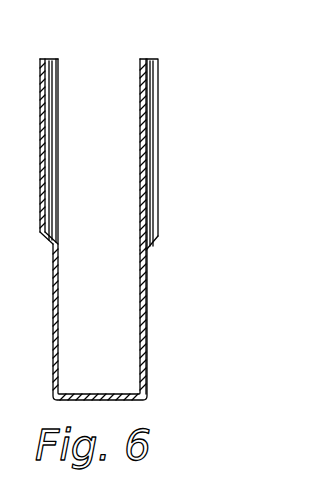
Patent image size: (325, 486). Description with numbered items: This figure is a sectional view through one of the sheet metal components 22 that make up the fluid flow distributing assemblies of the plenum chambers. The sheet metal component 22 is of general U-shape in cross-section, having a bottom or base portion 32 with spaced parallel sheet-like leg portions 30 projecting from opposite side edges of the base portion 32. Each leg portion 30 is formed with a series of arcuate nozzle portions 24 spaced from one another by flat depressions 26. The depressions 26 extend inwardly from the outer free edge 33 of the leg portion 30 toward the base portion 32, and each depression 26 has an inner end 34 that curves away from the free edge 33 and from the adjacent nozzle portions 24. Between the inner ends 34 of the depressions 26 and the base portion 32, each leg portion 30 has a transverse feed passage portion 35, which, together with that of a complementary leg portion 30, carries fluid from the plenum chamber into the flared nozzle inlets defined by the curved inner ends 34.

The sheet metal component 22 is at (106, 219).
The nozzle portion 24 is at (57, 173).
The flat depression 26 is at (41, 61).
The sheet-like leg portion 30 is at (53, 362).
The base portion 32 is at (118, 396).
The outer free edge 33 is at (53, 59).
The inner end of depression 34 is at (57, 236).
The transverse feed passage portion 35 is at (147, 328).